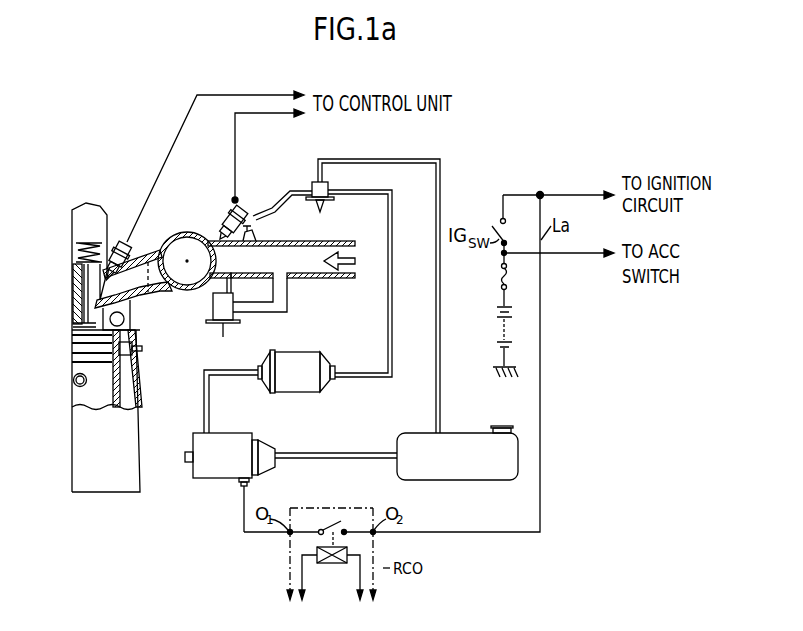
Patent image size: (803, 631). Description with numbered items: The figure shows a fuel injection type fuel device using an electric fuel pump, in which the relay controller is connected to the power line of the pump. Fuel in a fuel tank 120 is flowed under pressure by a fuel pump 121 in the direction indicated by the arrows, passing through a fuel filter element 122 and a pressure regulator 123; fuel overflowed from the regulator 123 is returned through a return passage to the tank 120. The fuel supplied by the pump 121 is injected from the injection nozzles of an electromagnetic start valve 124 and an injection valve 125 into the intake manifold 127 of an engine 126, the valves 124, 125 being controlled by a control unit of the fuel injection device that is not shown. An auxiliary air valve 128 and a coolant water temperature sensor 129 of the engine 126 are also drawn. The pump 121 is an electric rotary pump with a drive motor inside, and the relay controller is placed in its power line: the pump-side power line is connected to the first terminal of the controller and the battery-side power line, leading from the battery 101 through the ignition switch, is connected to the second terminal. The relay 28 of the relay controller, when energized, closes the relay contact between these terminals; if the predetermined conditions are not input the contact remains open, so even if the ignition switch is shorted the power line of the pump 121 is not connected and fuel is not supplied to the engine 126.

The fuel tank 120 is at (451, 442).
The fuel pump 121 is at (238, 442).
The fuel filter element 122 is at (304, 359).
The pressure regulator 123 is at (313, 184).
The electromagnetic start valve 124 is at (218, 237).
The injection valve 125 is at (122, 242).
The engine 126 is at (72, 432).
The intake manifold 127 is at (132, 286).
The auxiliary air valve 128 is at (227, 315).
The coolant water temperature sensor 129 is at (138, 358).
The battery 101 is at (497, 321).
The relay 28 is at (316, 564).